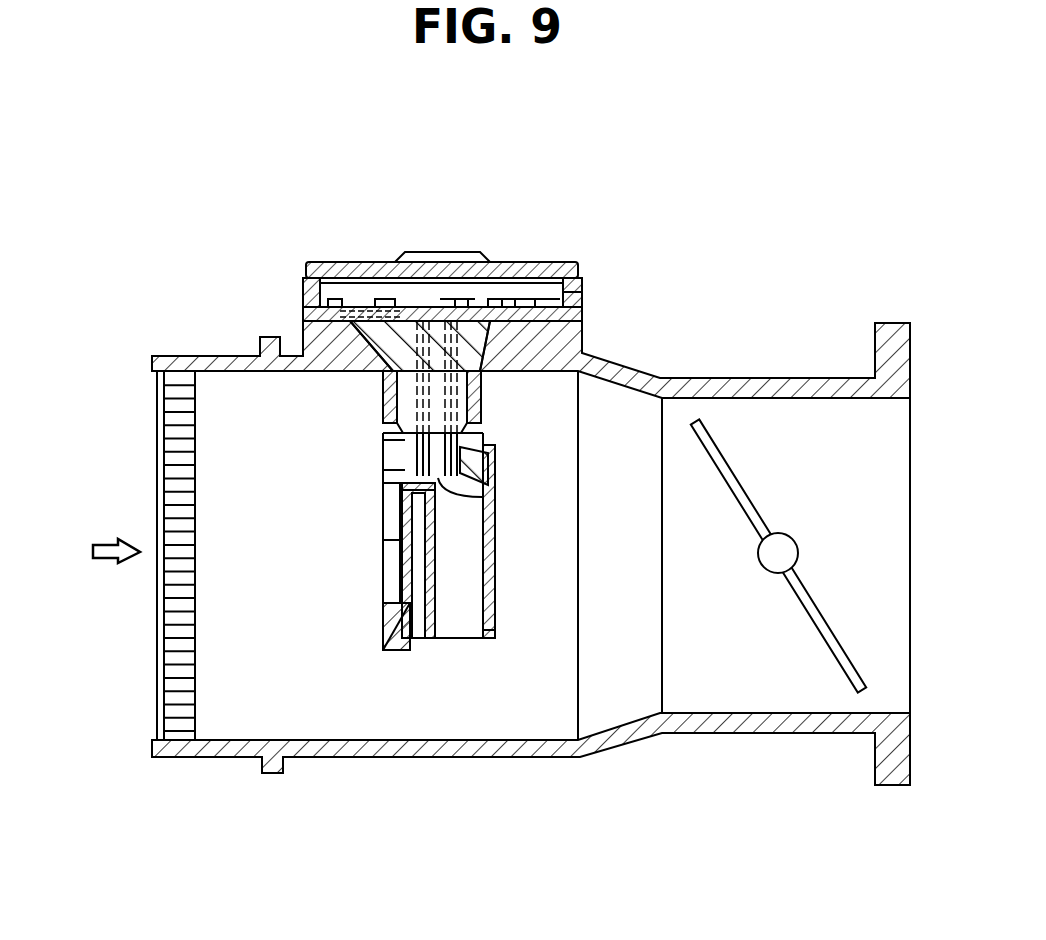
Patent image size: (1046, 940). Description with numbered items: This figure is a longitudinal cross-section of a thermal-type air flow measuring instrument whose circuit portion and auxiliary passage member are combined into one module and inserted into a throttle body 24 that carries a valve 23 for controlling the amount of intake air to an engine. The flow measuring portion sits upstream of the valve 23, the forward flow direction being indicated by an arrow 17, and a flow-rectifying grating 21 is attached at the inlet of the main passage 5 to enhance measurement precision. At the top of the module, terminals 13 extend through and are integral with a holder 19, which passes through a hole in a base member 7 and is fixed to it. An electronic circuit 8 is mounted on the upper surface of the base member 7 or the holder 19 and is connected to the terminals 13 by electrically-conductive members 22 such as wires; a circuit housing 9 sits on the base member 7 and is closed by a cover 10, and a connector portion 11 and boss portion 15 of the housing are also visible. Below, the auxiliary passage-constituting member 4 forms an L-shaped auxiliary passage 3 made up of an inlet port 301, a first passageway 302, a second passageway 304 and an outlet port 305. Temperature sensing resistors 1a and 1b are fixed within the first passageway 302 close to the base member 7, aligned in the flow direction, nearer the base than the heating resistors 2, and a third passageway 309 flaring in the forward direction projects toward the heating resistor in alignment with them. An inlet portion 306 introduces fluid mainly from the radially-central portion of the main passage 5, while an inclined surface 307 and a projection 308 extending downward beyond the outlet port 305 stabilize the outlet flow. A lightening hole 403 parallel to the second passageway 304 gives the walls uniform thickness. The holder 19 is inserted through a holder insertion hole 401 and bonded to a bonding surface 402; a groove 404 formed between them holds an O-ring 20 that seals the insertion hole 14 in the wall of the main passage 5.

The temperature sensing resistor 1a is at (417, 458).
The temperature sensing resistor 1b is at (417, 470).
The resistor 2 is at (478, 492).
The auxiliary passage 3 is at (462, 575).
The auxiliary passage-constituting member 4 is at (490, 605).
The main passage 5 is at (210, 385).
The base member 7 is at (583, 314).
The electronic circuit 8 is at (480, 262).
The circuit housing 9 is at (582, 284).
The cover 10 is at (321, 262).
The connector 11 is at (420, 252).
The terminal 13 is at (490, 447).
The insertion hole 14 is at (377, 372).
The boss portion 15 is at (590, 342).
The arrow 17 is at (94, 550).
The holder 19 is at (481, 408).
The O-ring 20 is at (357, 372).
The flow-rectifying grating 21 is at (165, 630).
The electrically-conductive member 22 is at (368, 302).
The valve 23 is at (827, 643).
The throttle body 24 is at (733, 380).
The inlet port 301 is at (395, 540).
The first passageway 302 is at (400, 488).
The second passageway 304 is at (463, 527).
The outlet port 305 is at (467, 640).
The inlet portion 306 is at (398, 565).
The inclined surface 307 is at (385, 640).
The projection 308 is at (407, 650).
The third passageway 309 is at (495, 458).
The holder insertion hole 401 is at (380, 400).
The bonding surface 402 is at (532, 300).
The lightening hole 403 is at (418, 632).
The groove 404 is at (468, 262).